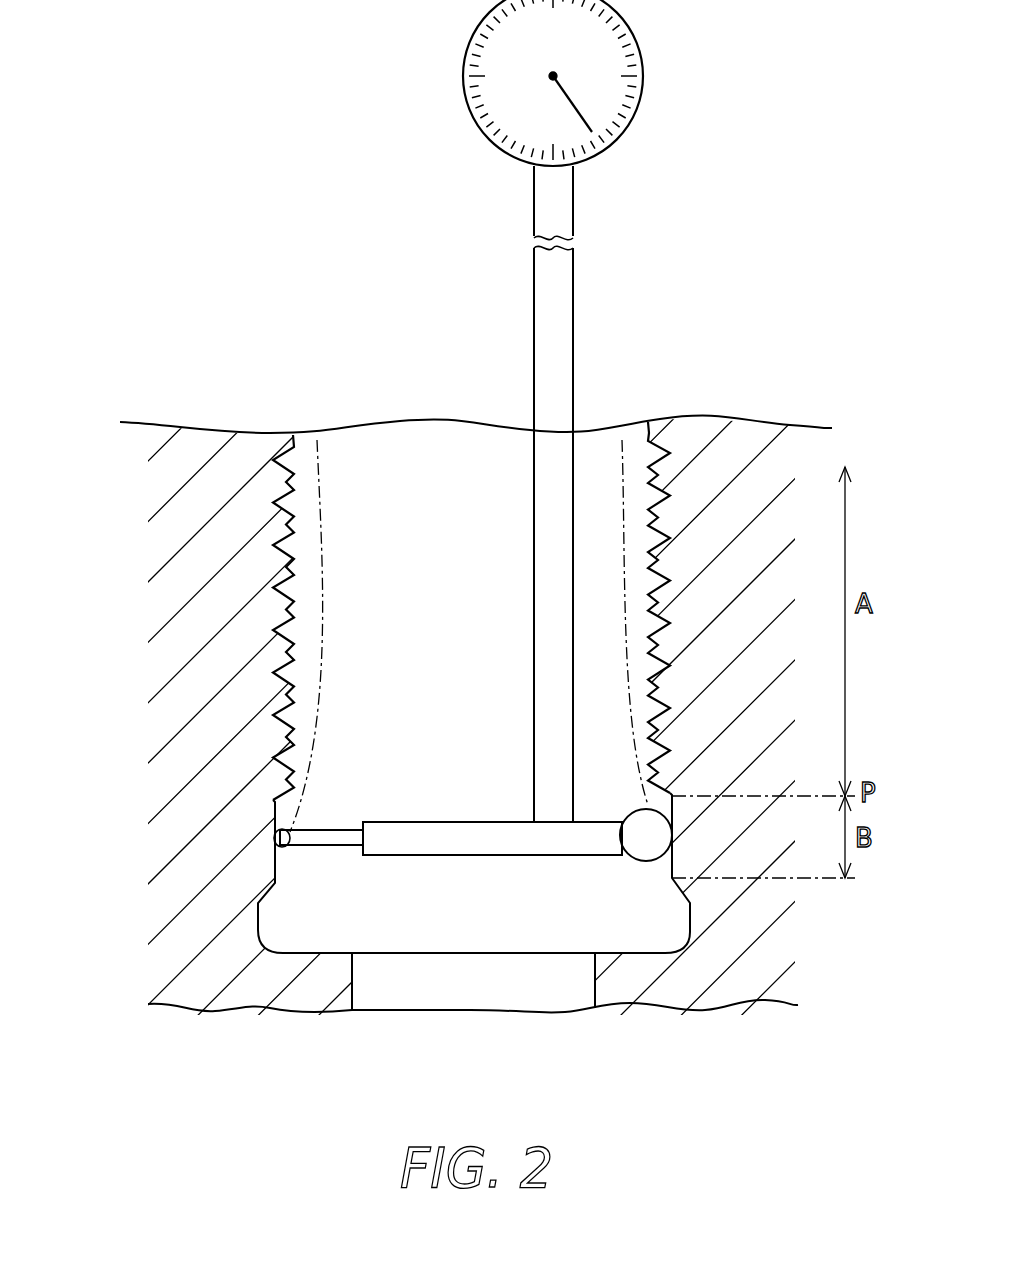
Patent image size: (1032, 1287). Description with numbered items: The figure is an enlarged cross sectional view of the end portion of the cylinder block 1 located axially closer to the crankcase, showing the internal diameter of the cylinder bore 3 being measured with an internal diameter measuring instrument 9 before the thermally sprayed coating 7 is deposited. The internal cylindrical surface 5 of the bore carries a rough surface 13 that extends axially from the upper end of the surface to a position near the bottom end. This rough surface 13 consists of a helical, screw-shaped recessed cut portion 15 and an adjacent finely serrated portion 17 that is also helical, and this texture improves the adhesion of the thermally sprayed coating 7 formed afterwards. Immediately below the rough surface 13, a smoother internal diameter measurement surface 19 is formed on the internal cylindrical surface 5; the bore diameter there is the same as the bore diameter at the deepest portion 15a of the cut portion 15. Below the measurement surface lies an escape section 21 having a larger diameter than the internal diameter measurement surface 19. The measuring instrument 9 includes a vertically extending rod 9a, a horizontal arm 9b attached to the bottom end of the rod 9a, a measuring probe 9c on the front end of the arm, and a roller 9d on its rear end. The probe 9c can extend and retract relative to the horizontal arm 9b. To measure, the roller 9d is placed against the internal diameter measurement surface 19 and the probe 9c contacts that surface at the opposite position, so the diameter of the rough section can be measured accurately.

The cylinder block 1 is at (740, 455).
The cylinder bore 3 is at (488, 570).
The internal cylindrical surface 5 is at (490, 455).
The thermally sprayed coating 7 is at (620, 488).
The internal diameter measuring instrument 9 is at (463, 42).
The rod 9a is at (562, 192).
The horizontal arm 9b is at (468, 822).
The measuring probe 9c is at (280, 835).
The roller 9d is at (648, 848).
The rough surface 13 is at (363, 564).
The recessed cut portion 15 is at (318, 458).
The deepest portion 15a is at (293, 453).
The serrated portion 17 is at (297, 481).
The internal diameter measurement surface 19 is at (280, 867).
The escape section 21 is at (260, 927).